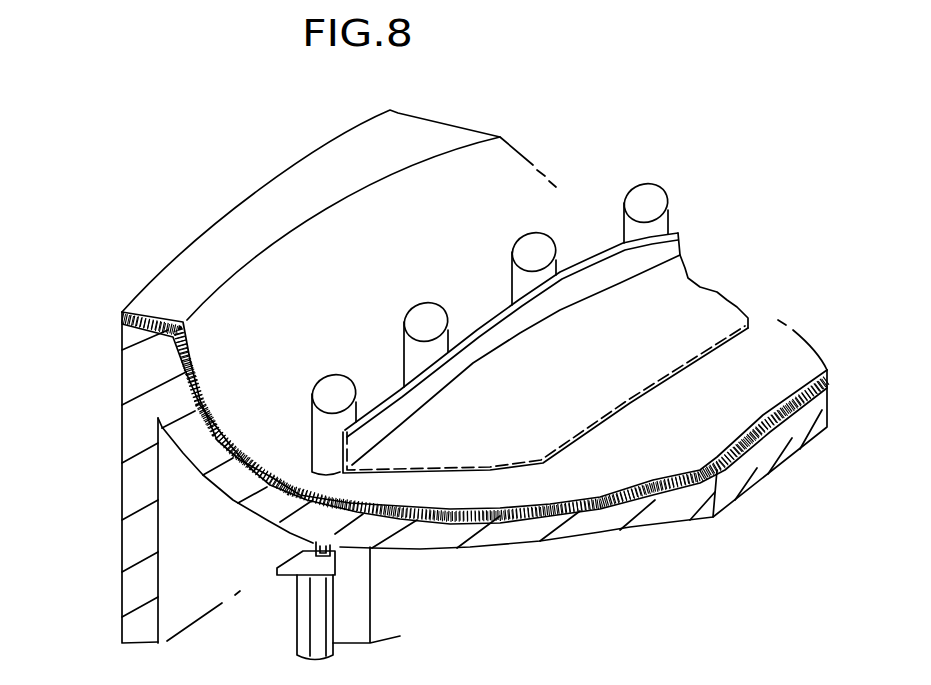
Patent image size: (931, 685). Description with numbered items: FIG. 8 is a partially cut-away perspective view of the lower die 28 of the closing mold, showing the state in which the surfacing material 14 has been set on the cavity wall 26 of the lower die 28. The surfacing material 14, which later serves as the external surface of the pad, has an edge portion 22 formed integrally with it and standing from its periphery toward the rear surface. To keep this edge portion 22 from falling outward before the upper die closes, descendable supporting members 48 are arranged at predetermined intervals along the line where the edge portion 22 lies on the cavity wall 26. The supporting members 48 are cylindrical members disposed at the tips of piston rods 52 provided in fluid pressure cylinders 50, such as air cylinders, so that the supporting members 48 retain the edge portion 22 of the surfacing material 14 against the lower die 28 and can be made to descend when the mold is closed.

The surfacing material 14 is at (655, 352).
The edge portion 22 is at (632, 268).
The cavity wall 26 is at (277, 372).
The lower die 28 is at (121, 428).
The supporting members 48 is at (336, 397).
The fluid pressure cylinders 50 is at (313, 643).
The piston rods 52 is at (314, 542).